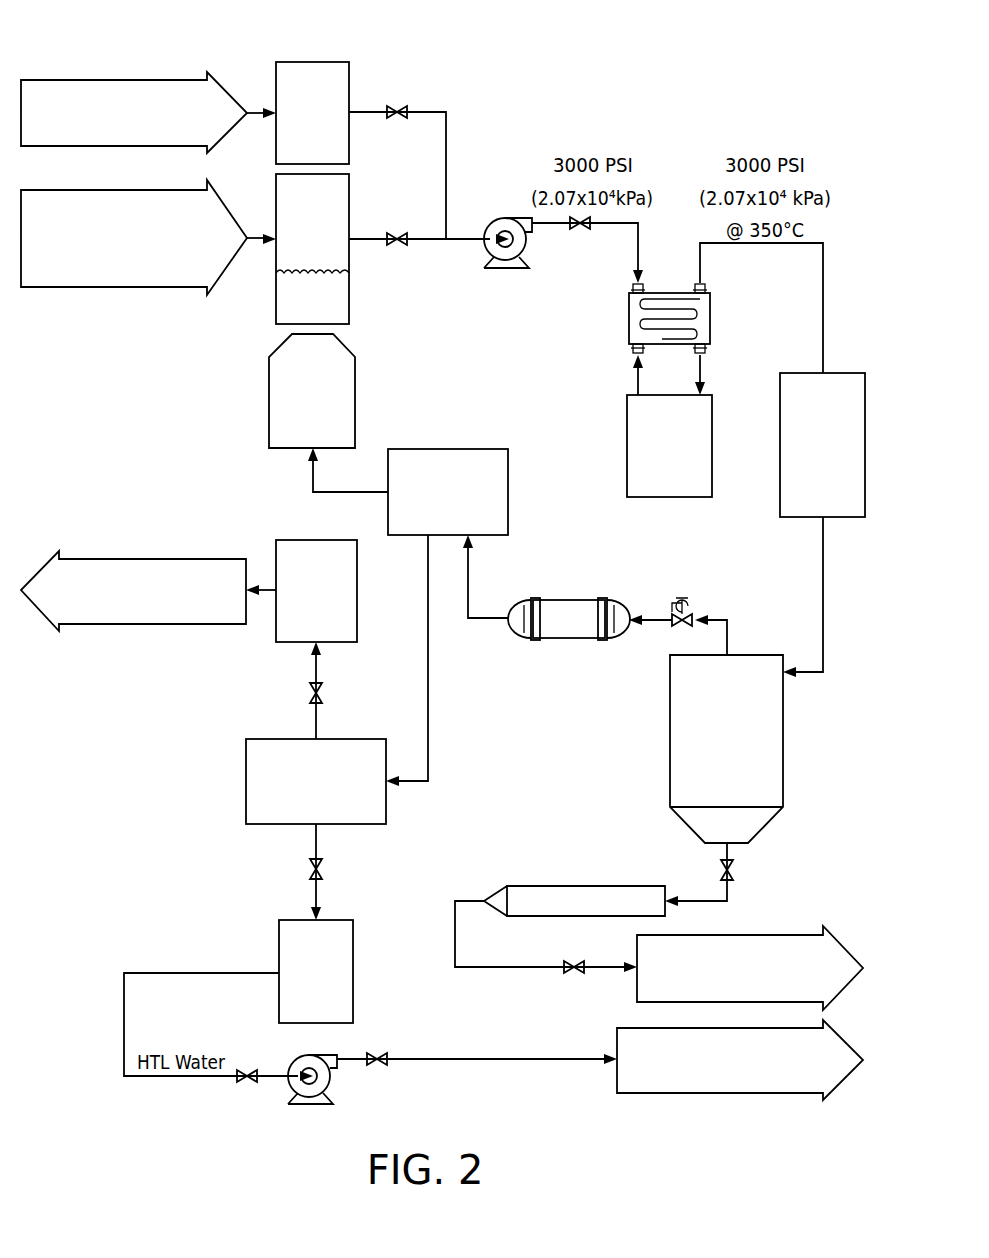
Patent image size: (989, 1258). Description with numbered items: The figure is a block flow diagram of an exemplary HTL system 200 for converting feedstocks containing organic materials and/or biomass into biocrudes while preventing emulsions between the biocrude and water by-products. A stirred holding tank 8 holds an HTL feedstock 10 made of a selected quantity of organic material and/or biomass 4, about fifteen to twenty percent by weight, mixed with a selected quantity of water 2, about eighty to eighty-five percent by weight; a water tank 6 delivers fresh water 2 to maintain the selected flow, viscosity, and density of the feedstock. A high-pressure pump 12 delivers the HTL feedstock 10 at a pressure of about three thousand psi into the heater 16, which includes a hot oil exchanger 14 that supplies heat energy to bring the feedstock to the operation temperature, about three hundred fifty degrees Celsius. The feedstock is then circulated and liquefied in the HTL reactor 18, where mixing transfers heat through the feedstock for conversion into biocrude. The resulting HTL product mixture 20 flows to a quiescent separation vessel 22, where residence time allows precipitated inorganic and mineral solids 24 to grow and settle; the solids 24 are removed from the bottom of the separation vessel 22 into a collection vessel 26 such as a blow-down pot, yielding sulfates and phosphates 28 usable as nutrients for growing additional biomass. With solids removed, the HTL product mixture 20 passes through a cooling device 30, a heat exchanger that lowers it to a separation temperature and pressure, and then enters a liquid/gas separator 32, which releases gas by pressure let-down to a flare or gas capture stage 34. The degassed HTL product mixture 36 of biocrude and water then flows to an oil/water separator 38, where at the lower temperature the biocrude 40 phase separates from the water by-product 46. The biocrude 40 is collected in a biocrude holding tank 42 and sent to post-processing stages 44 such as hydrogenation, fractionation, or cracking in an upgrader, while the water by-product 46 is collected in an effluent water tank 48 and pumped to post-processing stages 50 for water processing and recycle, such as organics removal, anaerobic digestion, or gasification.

The HTL system 200 is at (729, 96).
The water 2 is at (172, 80).
The organic material and/or biomass 4 is at (168, 287).
The water tank 6 is at (350, 86).
The stirred holding tank 8 is at (334, 249).
The HTL feedstock 10 is at (298, 310).
The high-pressure pump 12 is at (508, 218).
The hot oil exchanger 14 is at (628, 318).
The heater 16 is at (654, 481).
The HTL reactor 18 is at (808, 500).
The HTL product mixture 20 is at (727, 620).
The separation vessel 22 is at (713, 795).
The mineral solids 24 is at (725, 853).
The collection vessel 26 is at (556, 886).
The sulfates and phosphates 28 is at (783, 935).
The cooling device 30 is at (569, 600).
The liquid/gas separator 32 is at (452, 449).
The gas capture stage 34 is at (269, 393).
The HTL product mixture 36 is at (428, 762).
The oil/water separator 38 is at (246, 762).
The biocrude 40 is at (314, 720).
The biocrude holding tank 42 is at (291, 540).
The post-processing stages 44 is at (105, 559).
The water by-product 46 is at (314, 842).
The effluent water tank 48 is at (338, 920).
The post-processing stages 50 is at (617, 1040).